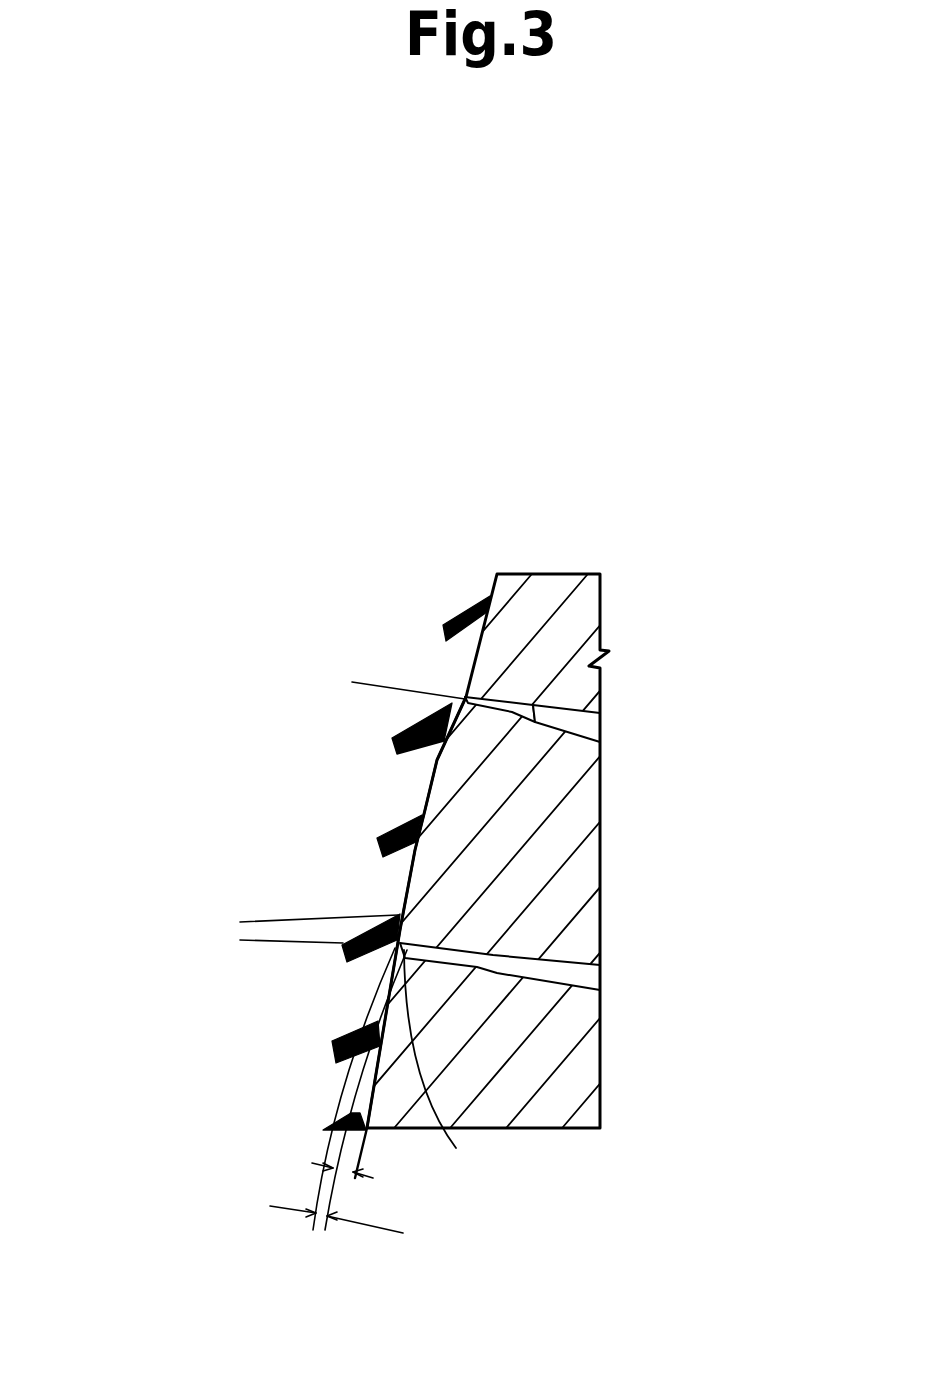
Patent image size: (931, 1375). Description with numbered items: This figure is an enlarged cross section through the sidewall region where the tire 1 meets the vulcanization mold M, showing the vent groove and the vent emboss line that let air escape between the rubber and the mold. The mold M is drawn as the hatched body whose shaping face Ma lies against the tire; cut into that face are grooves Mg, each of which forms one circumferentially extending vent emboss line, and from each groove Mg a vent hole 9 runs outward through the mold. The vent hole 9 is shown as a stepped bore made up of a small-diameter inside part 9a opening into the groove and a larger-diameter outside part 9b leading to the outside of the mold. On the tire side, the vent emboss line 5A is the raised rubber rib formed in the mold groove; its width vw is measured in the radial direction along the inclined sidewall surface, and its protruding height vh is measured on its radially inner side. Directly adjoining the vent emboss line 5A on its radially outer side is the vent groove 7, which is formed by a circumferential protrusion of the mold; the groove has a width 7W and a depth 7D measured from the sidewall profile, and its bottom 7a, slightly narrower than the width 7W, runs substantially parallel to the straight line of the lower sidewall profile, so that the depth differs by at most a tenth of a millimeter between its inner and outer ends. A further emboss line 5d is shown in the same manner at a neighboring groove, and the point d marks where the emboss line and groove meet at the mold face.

The cutting tool 1 is at (432, 549).
The vulcanization mold M is at (555, 573).
The cutting tooth 5d is at (467, 699).
The cutting edge d is at (467, 700).
The vent hole 9 is at (827, 536).
The inside part 9a is at (505, 702).
The outside part 9b is at (585, 712).
The width of the vent groove 7W is at (268, 975).
The vent groove 7 is at (437, 773).
The bottom of the vent groove 7a is at (418, 851).
The width of the vent emboss line vw is at (277, 922).
The body face Ma is at (410, 885).
The vent emboss line 5A is at (395, 955).
The groove Mg is at (446, 1125).
The depth of the vent groove 7D is at (333, 1206).
The protruding height of the vent emboss line vh is at (348, 1172).